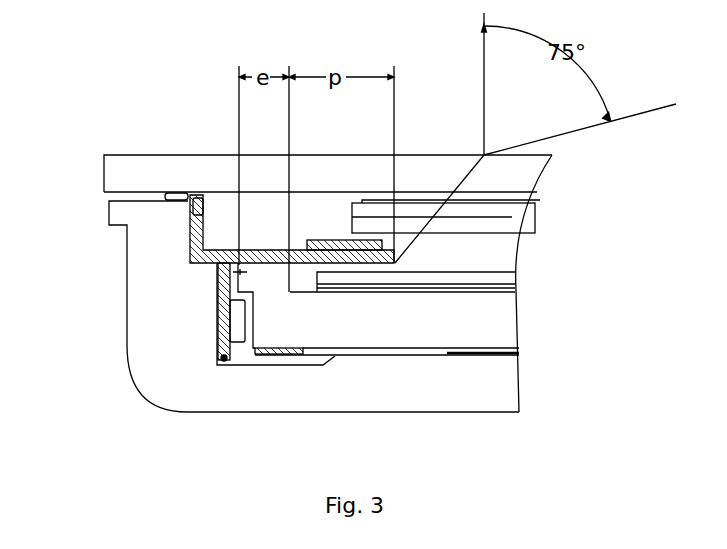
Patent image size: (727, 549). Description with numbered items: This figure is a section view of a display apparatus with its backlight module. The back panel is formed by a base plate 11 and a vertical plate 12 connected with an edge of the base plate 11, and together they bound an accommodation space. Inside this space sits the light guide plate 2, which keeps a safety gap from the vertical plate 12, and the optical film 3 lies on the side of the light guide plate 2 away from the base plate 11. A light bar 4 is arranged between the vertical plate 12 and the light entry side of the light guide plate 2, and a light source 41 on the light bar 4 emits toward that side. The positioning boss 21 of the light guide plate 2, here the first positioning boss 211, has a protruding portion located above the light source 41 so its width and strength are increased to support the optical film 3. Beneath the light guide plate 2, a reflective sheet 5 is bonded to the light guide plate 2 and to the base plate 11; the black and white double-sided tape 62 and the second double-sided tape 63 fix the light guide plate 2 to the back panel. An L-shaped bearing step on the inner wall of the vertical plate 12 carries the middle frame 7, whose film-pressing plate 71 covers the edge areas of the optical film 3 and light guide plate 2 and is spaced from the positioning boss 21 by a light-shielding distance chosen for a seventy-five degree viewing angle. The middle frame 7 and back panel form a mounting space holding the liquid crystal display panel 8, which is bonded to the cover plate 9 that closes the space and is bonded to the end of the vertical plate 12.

The light guide plate 2 is at (488, 310).
The optical film 3 is at (507, 278).
The light bar 4 is at (225, 358).
The reflective sheet 5 is at (316, 348).
The middle frame 7 is at (200, 222).
The liquid crystal display panel 8 is at (508, 215).
The cover plate 9 is at (507, 178).
The base plate 11 is at (483, 387).
The vertical plate 12 is at (155, 243).
The positioning boss 21 is at (220, 278).
The first positioning boss 211 is at (224, 311).
The light source 41 is at (237, 328).
The black and white double-sided tape 62 is at (261, 353).
The second double-sided tape 63 is at (485, 353).
The film-pressing plate 71 is at (290, 292).